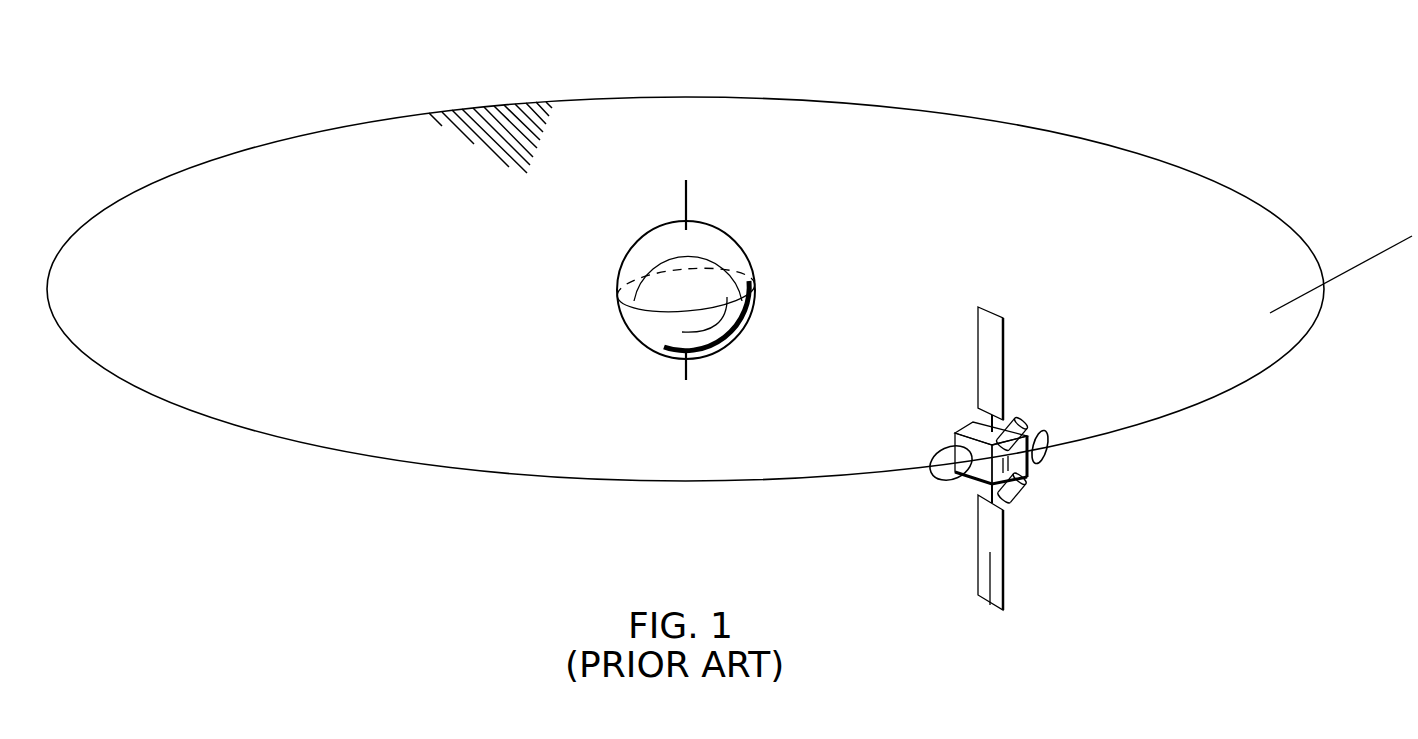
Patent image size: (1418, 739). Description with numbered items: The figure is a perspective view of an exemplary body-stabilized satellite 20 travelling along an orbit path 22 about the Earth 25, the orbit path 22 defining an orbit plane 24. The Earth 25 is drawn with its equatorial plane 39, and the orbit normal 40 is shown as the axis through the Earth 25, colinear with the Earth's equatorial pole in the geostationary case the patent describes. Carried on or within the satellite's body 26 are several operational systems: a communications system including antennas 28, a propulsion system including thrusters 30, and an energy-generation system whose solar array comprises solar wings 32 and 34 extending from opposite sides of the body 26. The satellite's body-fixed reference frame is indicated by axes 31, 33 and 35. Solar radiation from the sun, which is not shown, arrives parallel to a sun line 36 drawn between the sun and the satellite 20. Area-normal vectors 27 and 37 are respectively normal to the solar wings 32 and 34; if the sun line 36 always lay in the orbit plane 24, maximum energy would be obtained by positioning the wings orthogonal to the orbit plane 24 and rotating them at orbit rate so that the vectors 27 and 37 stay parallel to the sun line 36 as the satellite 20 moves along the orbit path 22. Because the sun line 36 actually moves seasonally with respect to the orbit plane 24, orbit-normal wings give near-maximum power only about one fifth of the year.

The body-stabilized satellite 20 is at (1017, 503).
The orbit path 22 is at (899, 467).
The orbit plane 24 is at (500, 122).
The Earth 25 is at (662, 222).
The satellite body 26 is at (970, 427).
The area-normal vector 27 is at (1089, 332).
The antennas 28 is at (935, 450).
The thrusters 30 is at (1015, 425).
The body-fixed reference frame axis 31 is at (1153, 436).
The solar wing 32 is at (988, 335).
The body-fixed reference frame axis 33 is at (992, 656).
The solar wing 34 is at (982, 575).
The body-fixed reference frame axis 35 is at (955, 437).
The sun line 36 is at (1059, 426).
The area-normal vector 37 is at (1091, 568).
The equatorial plane 39 is at (652, 310).
The orbit normal 40 is at (686, 193).